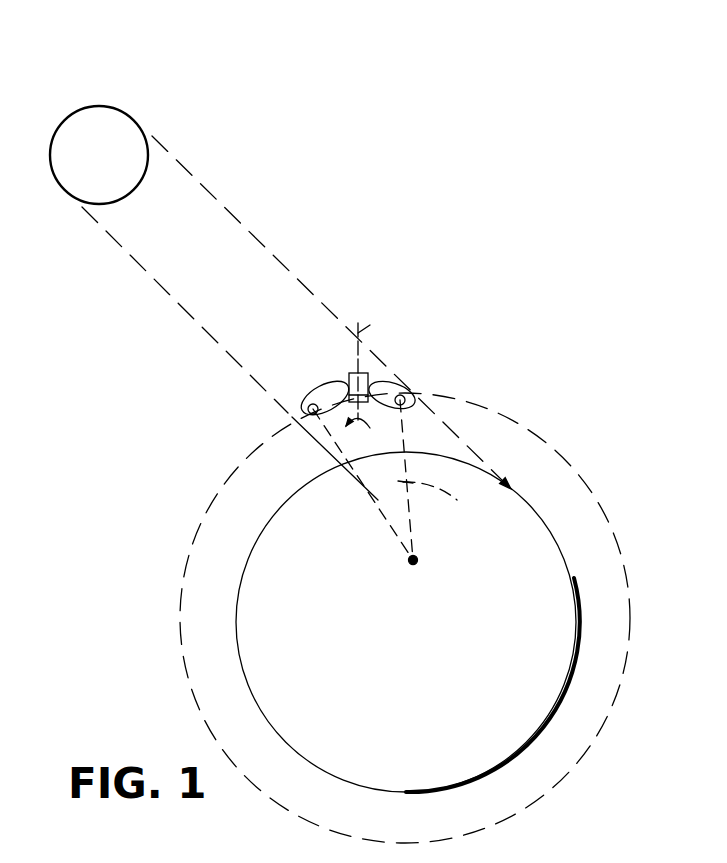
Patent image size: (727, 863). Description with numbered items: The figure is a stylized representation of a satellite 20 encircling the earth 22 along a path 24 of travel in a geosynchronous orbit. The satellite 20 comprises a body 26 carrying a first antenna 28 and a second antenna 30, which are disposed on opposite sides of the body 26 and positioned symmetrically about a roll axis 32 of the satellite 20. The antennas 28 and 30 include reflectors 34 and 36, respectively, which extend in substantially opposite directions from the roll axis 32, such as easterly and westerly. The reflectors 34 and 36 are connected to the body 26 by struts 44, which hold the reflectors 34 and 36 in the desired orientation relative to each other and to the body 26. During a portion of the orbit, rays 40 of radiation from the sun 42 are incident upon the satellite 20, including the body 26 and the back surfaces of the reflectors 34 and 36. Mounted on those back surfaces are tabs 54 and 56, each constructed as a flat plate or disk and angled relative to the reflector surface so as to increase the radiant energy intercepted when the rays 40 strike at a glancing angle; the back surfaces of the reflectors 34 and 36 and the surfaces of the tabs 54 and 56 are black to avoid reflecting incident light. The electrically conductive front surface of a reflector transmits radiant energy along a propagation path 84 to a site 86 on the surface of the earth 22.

The satellite 20 is at (397, 370).
The earth 22 is at (577, 630).
The path of travel 24 is at (560, 452).
The body 26 is at (350, 373).
The first antenna 28 is at (291, 410).
The second antenna 30 is at (420, 388).
The roll axis 32 is at (366, 331).
The reflector 34 is at (278, 433).
The reflector 36 is at (438, 370).
The rays 40 is at (196, 176).
The sun 42 is at (88, 104).
The struts 44 is at (348, 382).
The tab 54 is at (308, 418).
The tab 56 is at (417, 398).
The propagation path 84 is at (442, 504).
The site 86 is at (416, 562).